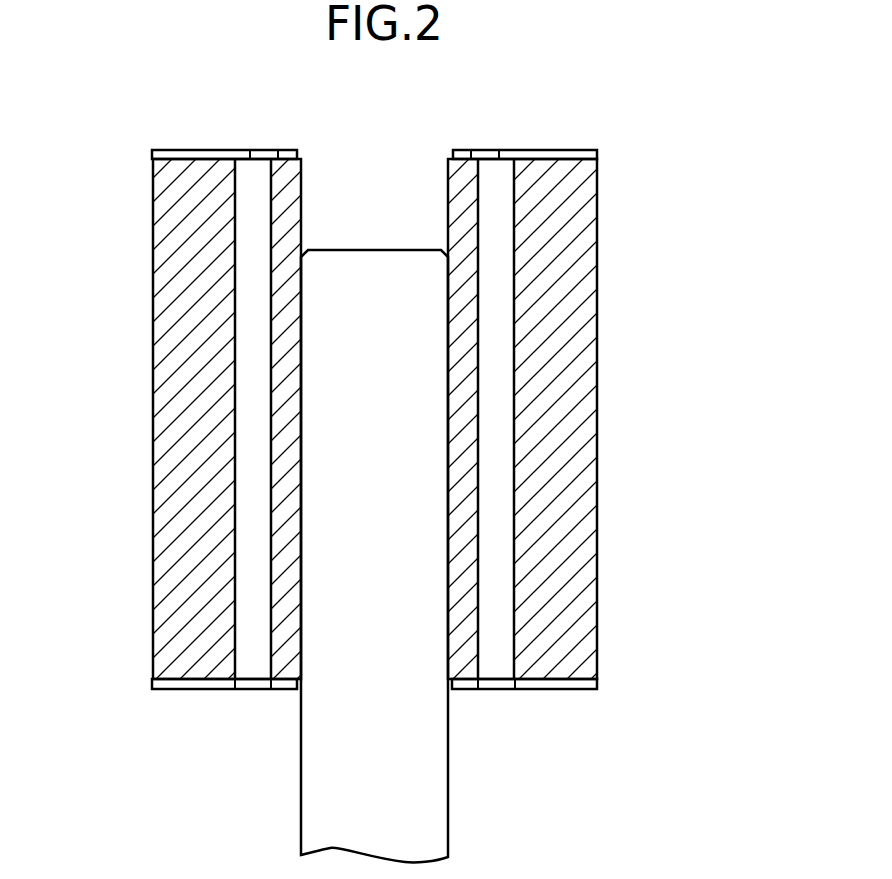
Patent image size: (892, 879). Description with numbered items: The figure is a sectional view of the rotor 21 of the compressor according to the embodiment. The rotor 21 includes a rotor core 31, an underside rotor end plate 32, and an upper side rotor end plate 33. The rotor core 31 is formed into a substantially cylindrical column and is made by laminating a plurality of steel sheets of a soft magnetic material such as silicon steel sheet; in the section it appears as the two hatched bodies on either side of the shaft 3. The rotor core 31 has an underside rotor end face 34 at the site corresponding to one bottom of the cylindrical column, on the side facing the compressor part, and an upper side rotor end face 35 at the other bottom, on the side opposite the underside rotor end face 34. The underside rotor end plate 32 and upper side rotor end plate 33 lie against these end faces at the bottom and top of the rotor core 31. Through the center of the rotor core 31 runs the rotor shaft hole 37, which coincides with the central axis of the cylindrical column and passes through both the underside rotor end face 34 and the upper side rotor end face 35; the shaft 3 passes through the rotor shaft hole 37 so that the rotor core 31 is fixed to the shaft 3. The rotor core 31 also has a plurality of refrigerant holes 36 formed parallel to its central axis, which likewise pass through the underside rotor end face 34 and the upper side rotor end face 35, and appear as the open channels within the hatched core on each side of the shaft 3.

The shaft 3 is at (379, 265).
The rotor 21 is at (567, 420).
The rotor core 31 is at (599, 450).
The underside rotor end plate 32 is at (550, 683).
The upper side rotor end plate 33 is at (550, 157).
The underside rotor end face 34 is at (198, 683).
The upper side rotor end face 35 is at (190, 157).
The refrigerant holes 36 is at (250, 332).
The rotor shaft hole 37 is at (305, 471).